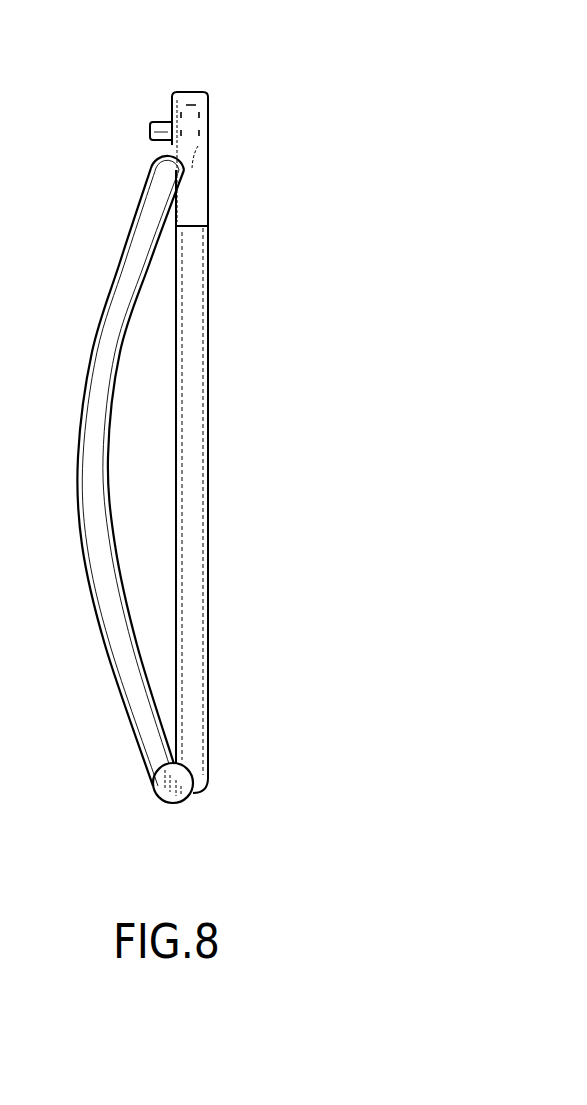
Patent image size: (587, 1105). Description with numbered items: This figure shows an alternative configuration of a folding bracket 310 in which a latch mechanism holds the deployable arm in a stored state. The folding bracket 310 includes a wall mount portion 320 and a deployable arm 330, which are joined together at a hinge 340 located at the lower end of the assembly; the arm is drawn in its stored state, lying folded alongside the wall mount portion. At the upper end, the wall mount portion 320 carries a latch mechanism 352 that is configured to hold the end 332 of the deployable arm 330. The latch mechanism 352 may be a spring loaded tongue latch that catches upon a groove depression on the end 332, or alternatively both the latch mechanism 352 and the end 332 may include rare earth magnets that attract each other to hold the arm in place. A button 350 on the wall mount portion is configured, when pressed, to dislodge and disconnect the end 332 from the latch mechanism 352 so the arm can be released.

The folding bracket 310 is at (207, 96).
The wall mount portion 320 is at (203, 452).
The deployable arm 330 is at (84, 563).
The end 332 is at (157, 175).
The hinge 340 is at (183, 804).
The button 350 is at (163, 121).
The latch mechanism 352 is at (208, 146).